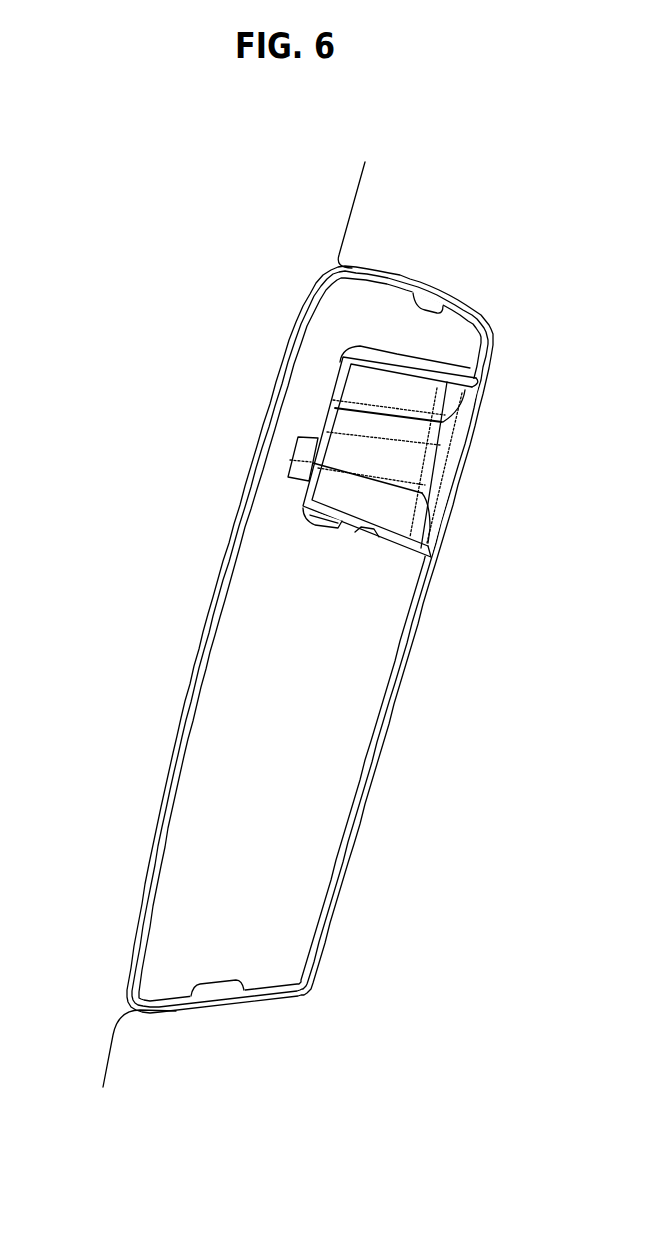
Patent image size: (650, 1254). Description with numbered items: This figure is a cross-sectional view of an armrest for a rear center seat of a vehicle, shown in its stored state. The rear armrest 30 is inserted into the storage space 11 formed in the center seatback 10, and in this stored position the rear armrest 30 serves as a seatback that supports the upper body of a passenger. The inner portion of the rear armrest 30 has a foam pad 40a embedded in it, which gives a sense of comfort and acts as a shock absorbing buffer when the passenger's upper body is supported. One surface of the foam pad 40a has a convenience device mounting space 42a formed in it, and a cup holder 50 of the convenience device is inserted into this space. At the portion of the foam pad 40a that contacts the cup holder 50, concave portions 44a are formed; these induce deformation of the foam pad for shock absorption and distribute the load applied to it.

The center seatback 10 is at (335, 211).
The rear armrest 30 is at (140, 796).
The foam pad 40a is at (343, 785).
The cup holder 50 is at (408, 441).
The concave portions 44a is at (306, 450).
The convenience device mounting space 42a is at (360, 533).
The storage space 11 is at (434, 510).